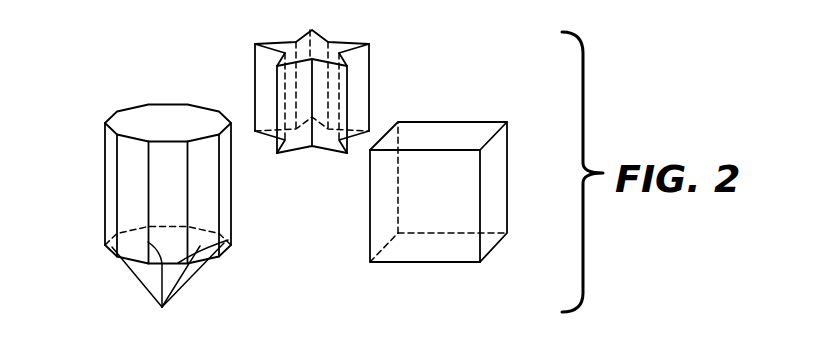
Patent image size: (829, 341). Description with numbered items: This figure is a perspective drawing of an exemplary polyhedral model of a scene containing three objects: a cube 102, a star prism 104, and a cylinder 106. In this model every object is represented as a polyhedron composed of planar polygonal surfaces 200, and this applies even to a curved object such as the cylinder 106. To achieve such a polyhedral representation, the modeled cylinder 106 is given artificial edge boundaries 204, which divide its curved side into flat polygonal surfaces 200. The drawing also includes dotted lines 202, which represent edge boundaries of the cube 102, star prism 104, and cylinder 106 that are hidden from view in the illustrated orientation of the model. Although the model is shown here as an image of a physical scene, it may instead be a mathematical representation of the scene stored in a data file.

The cube 102 is at (465, 125).
The star prism 104 is at (300, 42).
The cylinder 106 is at (153, 112).
The planar polygonal surfaces 200 is at (228, 195).
The dotted lines 202 is at (106, 213).
The artificial edge boundaries 204 is at (170, 289).